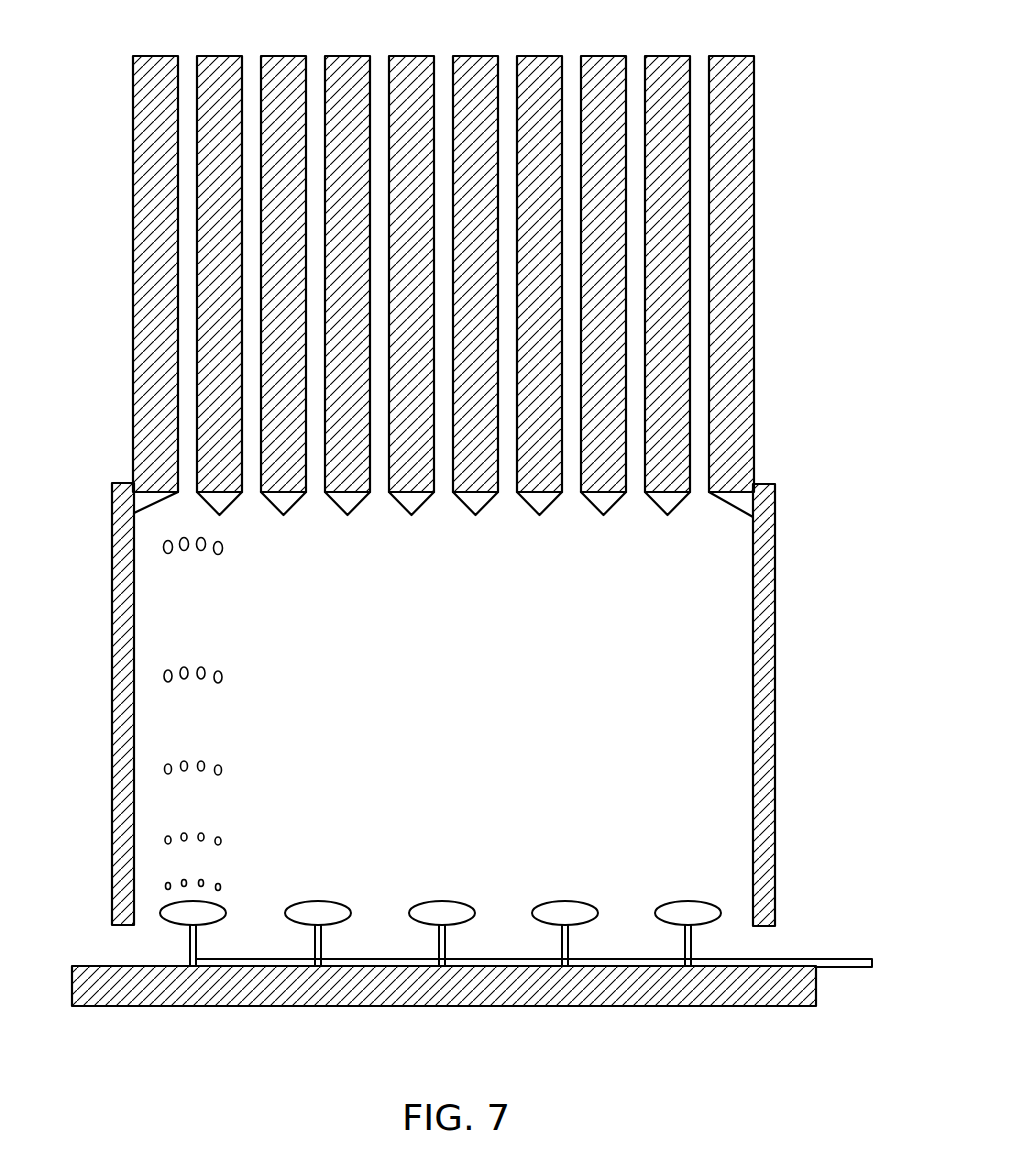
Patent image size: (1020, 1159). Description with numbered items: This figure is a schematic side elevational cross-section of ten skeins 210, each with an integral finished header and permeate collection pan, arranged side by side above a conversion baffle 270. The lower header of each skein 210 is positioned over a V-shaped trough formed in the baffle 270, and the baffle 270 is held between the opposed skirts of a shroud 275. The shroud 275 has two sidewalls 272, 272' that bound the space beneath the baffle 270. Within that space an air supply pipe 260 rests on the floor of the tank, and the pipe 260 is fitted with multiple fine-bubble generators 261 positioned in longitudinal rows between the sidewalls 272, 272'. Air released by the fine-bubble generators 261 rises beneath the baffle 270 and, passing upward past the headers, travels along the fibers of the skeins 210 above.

The skeins 210 is at (417, 56).
The baffle 270 is at (350, 516).
The shroud 275 is at (805, 531).
The sidewall 272 is at (806, 705).
The sidewall 272' is at (81, 704).
The fine-bubble generators 261 is at (325, 900).
The air supply pipe 260 is at (840, 959).